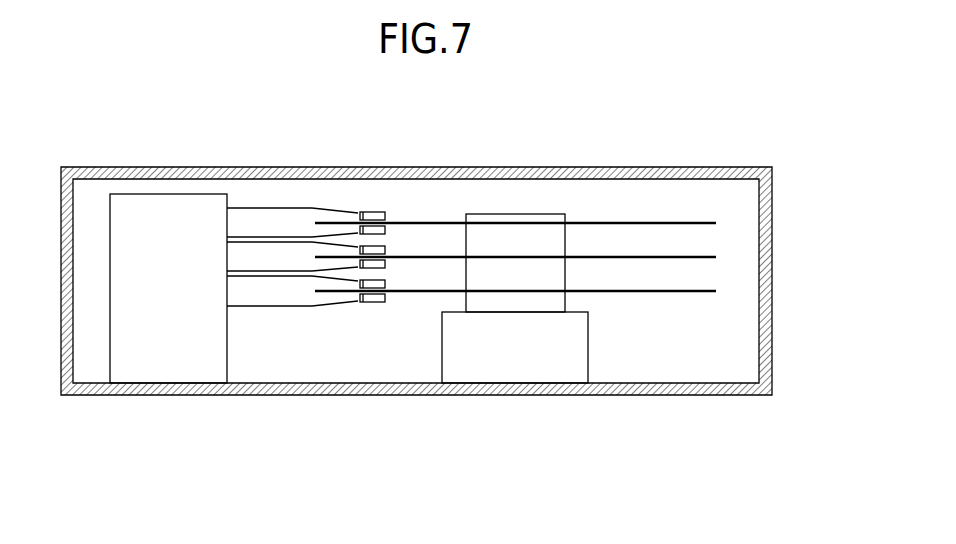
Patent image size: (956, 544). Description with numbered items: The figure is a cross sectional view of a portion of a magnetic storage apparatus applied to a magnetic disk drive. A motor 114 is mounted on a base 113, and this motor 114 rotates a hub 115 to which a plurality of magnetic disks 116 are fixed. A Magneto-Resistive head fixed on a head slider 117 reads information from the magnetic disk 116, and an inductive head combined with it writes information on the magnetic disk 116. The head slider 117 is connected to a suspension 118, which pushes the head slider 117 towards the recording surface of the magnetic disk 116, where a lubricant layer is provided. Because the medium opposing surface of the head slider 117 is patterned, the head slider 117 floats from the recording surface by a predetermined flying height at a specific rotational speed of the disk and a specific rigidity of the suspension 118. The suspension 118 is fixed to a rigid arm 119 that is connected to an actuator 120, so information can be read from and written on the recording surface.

The base 113 is at (720, 393).
The motor 114 is at (535, 372).
The hub 115 is at (527, 210).
The magnetic disk 116 is at (647, 218).
The head slider 117 is at (384, 207).
The suspension 118 is at (348, 205).
The rigid arm 119 is at (281, 203).
The actuator 120 is at (173, 372).